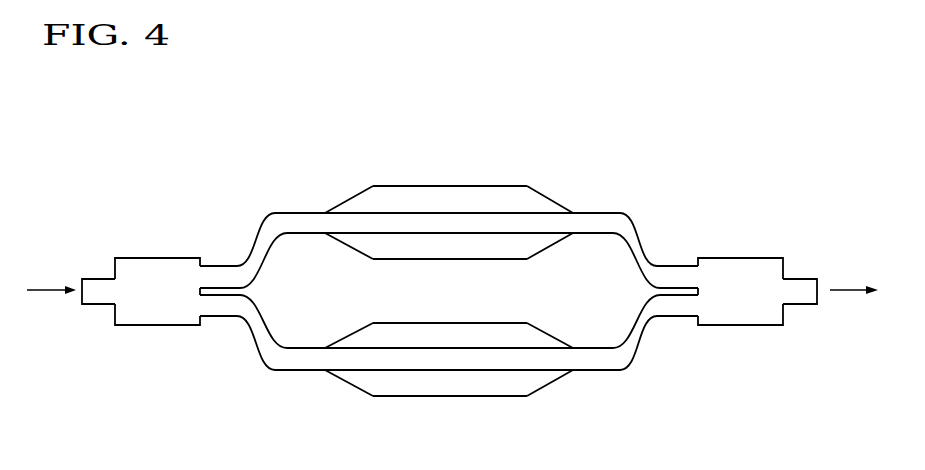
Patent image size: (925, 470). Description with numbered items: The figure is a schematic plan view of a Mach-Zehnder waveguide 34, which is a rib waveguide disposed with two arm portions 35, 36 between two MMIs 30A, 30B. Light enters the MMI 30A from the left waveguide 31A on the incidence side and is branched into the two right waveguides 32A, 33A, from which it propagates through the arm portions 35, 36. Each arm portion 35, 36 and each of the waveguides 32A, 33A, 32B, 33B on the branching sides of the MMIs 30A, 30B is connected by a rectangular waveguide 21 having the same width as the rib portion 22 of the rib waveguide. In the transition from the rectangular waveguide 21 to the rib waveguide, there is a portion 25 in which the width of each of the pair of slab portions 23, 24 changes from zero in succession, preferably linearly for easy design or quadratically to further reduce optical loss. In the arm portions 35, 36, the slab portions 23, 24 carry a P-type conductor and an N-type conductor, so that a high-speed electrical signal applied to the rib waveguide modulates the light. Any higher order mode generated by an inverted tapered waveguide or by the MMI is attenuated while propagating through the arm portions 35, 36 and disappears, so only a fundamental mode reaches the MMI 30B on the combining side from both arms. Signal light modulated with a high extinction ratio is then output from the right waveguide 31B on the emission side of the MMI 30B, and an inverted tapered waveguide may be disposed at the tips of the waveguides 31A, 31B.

The Mach-Zehnder waveguide 34 is at (197, 126).
The rectangular waveguide 21 is at (305, 216).
The rib portion 22 is at (436, 219).
The slab portion 23 is at (399, 186).
The slab portion 24 is at (400, 250).
The portion in which the width of the slab portions changes 25 is at (360, 337).
The MMI 30A is at (160, 258).
The MMI 30B is at (746, 258).
The waveguide on the incidence side 31A is at (97, 278).
The waveguide on the emission side 31B is at (804, 279).
The waveguide on the branching side 32A is at (222, 269).
The waveguide on the branching side 32B is at (680, 268).
The waveguide on the branching side 33A is at (218, 312).
The waveguide on the branching side 33B is at (681, 313).
The arm portion 35 is at (594, 217).
The arm portion 36 is at (593, 362).